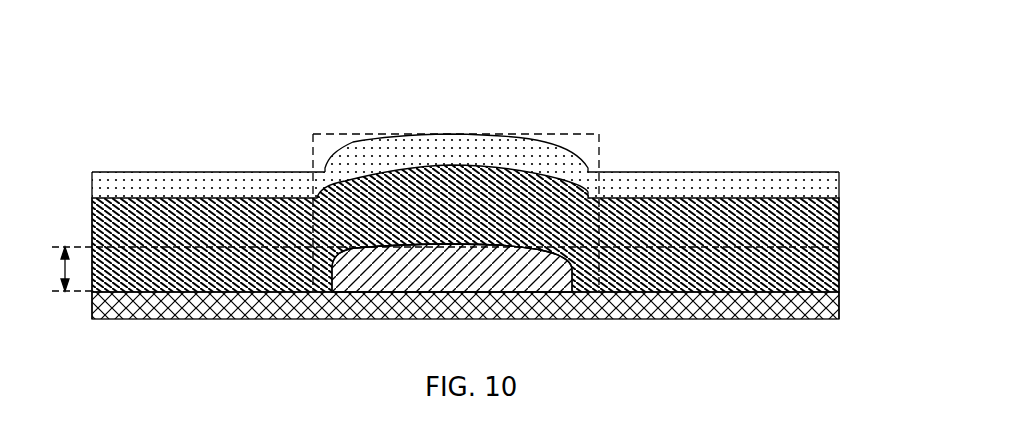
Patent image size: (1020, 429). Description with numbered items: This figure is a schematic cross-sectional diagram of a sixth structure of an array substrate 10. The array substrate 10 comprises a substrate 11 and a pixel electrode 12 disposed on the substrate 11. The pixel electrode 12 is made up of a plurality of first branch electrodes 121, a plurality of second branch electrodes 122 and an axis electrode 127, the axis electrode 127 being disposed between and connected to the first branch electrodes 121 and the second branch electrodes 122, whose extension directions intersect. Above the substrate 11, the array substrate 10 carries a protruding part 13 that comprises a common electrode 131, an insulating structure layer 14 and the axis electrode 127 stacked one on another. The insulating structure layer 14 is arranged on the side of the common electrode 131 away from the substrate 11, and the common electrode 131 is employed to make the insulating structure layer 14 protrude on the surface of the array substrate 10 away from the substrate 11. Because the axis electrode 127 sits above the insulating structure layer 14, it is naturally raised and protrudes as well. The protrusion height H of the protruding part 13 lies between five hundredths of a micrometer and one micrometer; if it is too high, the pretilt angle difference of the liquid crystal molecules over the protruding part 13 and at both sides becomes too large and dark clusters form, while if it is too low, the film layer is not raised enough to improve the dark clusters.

The array substrate 10 is at (110, 72).
The substrate 11 is at (828, 302).
The pixel electrode 12 is at (678, 83).
The first branch electrodes 121 is at (206, 172).
The second branch electrodes 122 is at (678, 175).
The axis electrode 127 is at (446, 137).
The protruding part 13 is at (600, 268).
The common electrode 131 is at (527, 266).
The insulating structure layer 14 is at (828, 265).